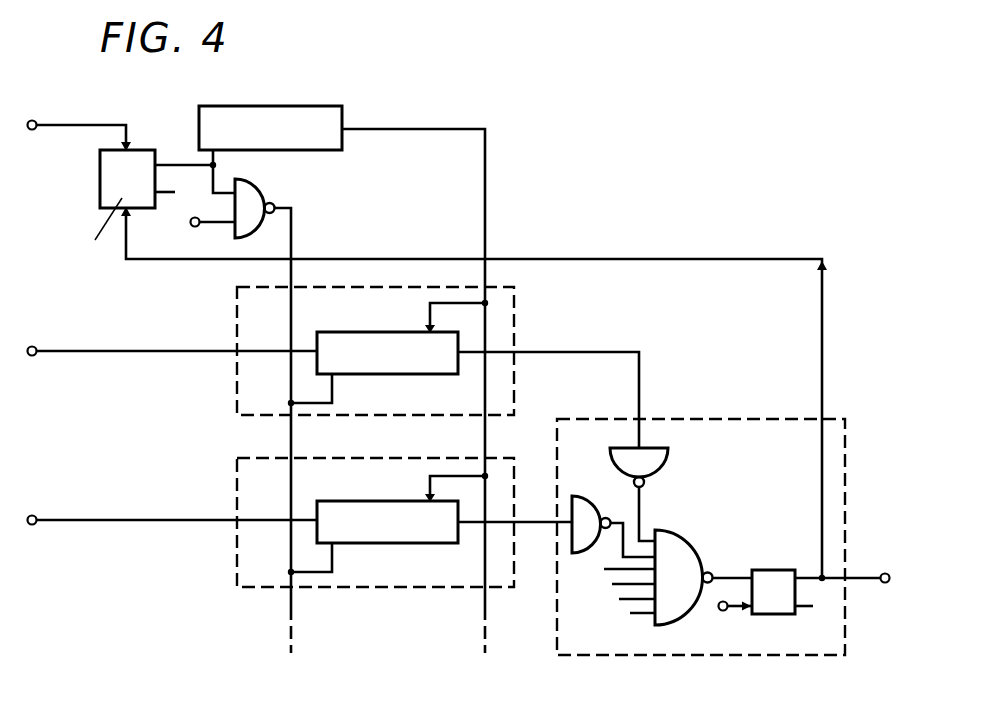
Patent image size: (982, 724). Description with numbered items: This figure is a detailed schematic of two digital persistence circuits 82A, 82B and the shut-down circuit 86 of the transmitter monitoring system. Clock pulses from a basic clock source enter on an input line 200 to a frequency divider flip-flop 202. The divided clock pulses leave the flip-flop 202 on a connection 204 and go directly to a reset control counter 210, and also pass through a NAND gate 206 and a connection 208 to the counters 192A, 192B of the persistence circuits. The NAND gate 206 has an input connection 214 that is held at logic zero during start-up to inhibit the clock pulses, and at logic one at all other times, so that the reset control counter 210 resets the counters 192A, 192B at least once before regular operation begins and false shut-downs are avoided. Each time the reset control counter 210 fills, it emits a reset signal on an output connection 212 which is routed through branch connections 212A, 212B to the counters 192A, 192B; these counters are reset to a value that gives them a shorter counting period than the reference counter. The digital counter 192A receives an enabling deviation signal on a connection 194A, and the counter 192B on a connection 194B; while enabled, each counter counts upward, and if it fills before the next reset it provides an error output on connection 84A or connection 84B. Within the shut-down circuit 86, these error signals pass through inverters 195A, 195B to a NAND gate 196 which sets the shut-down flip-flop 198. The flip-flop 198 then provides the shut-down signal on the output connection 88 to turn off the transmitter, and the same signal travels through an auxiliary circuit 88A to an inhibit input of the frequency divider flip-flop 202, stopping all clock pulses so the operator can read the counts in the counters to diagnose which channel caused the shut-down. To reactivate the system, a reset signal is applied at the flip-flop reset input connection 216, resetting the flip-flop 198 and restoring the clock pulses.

The input line 200 is at (84, 126).
The frequency divider flip-flop 202 is at (99, 196).
The connection 204 is at (182, 165).
The NAND gate 206 is at (262, 190).
The connection 208 is at (292, 240).
The reset control counter 210 is at (320, 106).
The output connection 212 is at (420, 129).
The input connection 214 is at (190, 223).
The digital persistence circuit 82A is at (237, 305).
The digital persistence circuit 82B is at (237, 479).
The connection 194A is at (83, 351).
The connection 194B is at (83, 520).
The digital counter 192A is at (396, 374).
The digital counter 192B is at (394, 543).
The branch connection 212A is at (430, 310).
The branch connection 212B is at (430, 483).
The connection 84A is at (572, 352).
The connection 84B is at (545, 524).
The shut-down circuit 86 is at (750, 419).
The auxiliary circuit 88A is at (690, 259).
The output connection 88 is at (864, 580).
The inverter 195A is at (670, 463).
The inverter 195B is at (582, 496).
The NAND gate 196 is at (680, 534).
The shut-down flip-flop 198 is at (784, 570).
The flip-flop reset input connection 216 is at (721, 611).